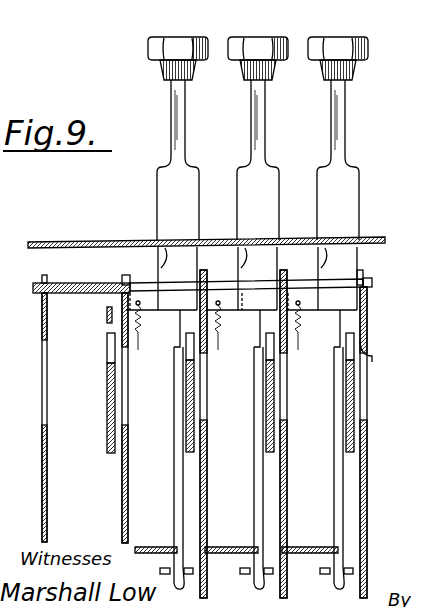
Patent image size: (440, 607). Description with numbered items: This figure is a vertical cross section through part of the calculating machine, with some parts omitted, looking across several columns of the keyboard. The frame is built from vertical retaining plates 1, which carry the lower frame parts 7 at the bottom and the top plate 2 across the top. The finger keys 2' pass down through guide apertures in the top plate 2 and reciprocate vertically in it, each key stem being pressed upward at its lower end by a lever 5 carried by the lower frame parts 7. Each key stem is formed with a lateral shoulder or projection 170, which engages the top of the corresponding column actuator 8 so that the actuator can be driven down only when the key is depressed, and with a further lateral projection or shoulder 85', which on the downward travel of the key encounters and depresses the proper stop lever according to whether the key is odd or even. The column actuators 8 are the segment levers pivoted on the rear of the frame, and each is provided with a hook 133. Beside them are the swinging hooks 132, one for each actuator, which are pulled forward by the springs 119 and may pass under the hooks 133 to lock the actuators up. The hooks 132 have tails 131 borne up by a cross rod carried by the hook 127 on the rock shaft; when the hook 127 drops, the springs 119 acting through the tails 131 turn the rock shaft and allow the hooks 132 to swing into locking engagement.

The vertical retaining plates 1 is at (122, 478).
The top plate 2 is at (206, 230).
The finger keys 2' is at (258, 299).
The lever 5 is at (254, 587).
The lower frame parts 7 is at (325, 587).
The column actuators 8 is at (107, 414).
The lateral projection or shoulder of the key stem 85' is at (283, 324).
The spring 119 is at (218, 336).
The hook 127 is at (106, 316).
The hook tails 131 is at (199, 272).
The swinging hooks 132 is at (157, 386).
The hooks on the actuators 133 is at (107, 337).
The shoulder or projection 170 is at (367, 354).